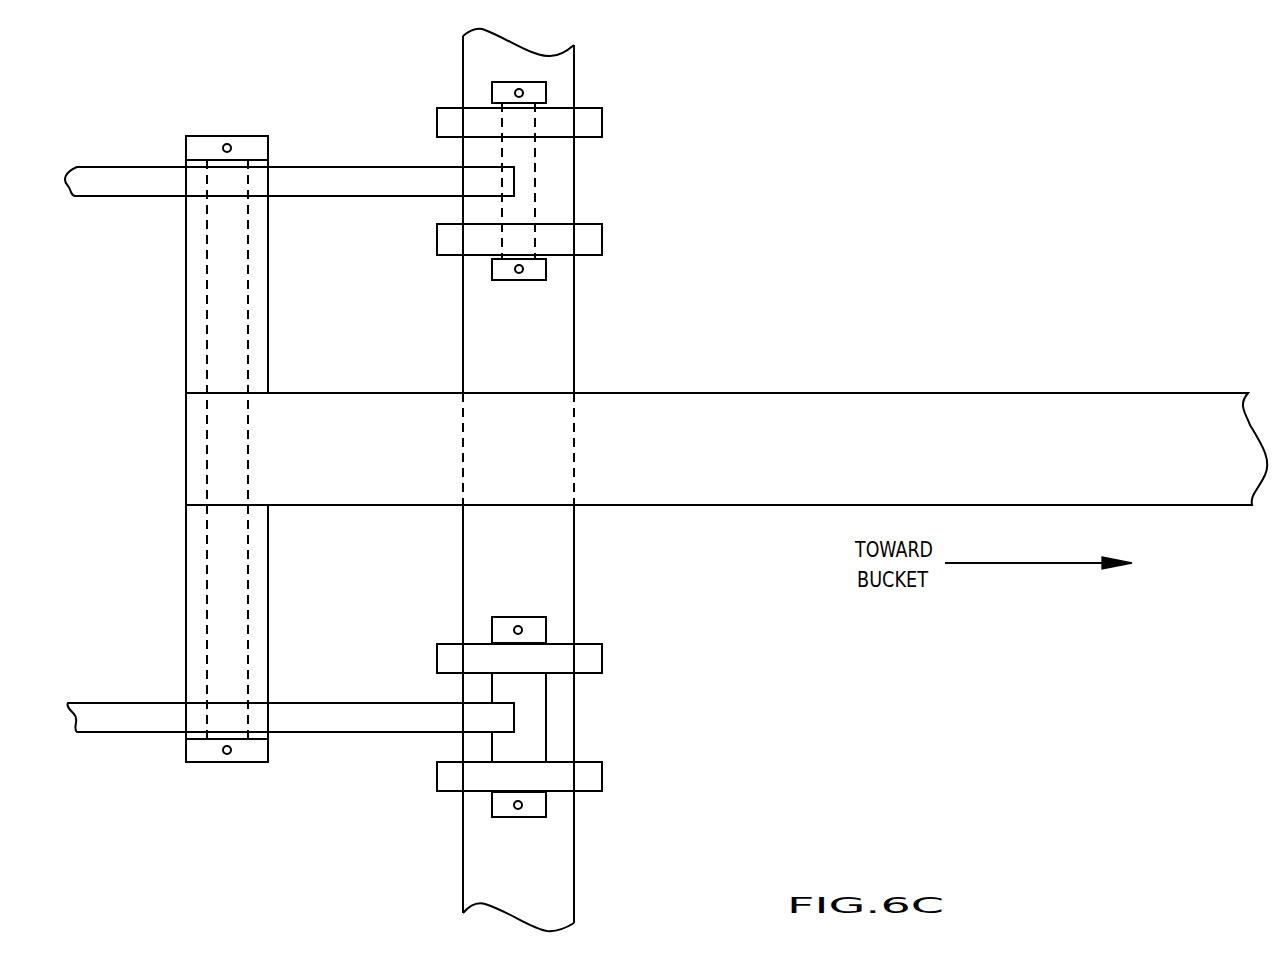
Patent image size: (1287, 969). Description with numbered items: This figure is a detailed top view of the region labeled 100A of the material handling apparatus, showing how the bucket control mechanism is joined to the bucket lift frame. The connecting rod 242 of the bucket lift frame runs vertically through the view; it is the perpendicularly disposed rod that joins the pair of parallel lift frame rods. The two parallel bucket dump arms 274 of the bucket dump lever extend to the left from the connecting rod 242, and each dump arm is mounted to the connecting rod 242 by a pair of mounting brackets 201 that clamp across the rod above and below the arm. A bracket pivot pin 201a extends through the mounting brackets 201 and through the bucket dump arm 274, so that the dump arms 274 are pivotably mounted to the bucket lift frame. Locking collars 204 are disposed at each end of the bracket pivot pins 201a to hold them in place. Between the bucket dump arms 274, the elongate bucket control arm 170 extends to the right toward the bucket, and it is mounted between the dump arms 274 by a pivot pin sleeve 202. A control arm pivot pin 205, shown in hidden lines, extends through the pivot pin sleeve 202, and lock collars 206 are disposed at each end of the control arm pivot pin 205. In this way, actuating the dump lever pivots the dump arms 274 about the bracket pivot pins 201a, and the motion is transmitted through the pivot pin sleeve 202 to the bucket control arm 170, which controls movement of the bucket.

The mounting assembly 100A is at (902, 188).
The bucket control arm 170 is at (897, 423).
The connecting rod 242 is at (550, 360).
The pivot pin sleeve 202 is at (195, 297).
The control arm pivot pin 205 is at (228, 562).
The lock collar 206 is at (247, 143).
The bucket dump arm 274 is at (122, 176).
The mounting bracket 201 is at (592, 126).
The locking collar 204 is at (500, 92).
The bracket pivot pin 201a is at (518, 104).